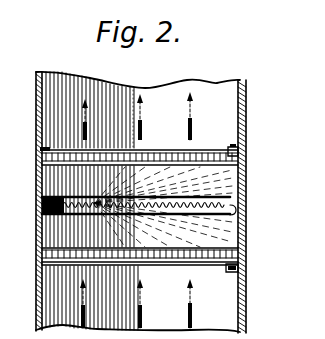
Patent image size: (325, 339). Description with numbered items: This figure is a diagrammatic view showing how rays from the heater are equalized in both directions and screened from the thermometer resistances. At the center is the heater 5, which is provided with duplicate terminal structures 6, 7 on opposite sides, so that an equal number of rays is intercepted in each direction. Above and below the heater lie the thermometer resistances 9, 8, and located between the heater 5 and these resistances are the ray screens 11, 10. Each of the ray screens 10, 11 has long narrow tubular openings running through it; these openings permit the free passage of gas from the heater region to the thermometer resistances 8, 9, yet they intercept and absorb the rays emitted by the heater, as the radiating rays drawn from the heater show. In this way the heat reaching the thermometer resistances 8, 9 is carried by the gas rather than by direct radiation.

The heater 5 is at (236, 211).
The terminal structure 6 is at (210, 222).
The terminal structure 7 is at (202, 195).
The thermometer resistance 8 is at (211, 275).
The thermometer resistance 9 is at (208, 151).
The ray screen 10 is at (226, 255).
The ray screen 11 is at (240, 157).